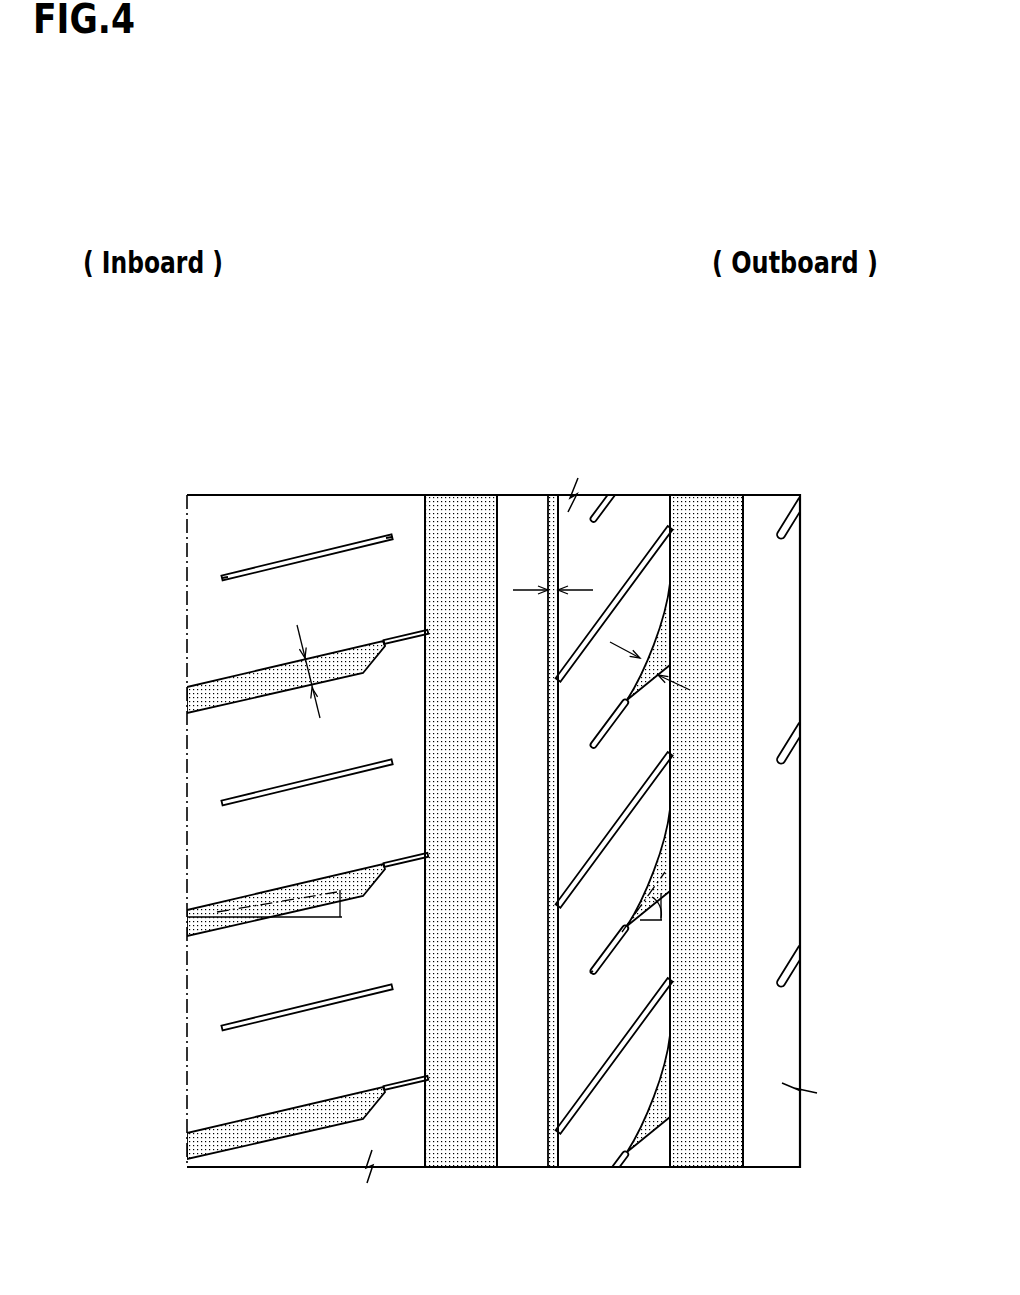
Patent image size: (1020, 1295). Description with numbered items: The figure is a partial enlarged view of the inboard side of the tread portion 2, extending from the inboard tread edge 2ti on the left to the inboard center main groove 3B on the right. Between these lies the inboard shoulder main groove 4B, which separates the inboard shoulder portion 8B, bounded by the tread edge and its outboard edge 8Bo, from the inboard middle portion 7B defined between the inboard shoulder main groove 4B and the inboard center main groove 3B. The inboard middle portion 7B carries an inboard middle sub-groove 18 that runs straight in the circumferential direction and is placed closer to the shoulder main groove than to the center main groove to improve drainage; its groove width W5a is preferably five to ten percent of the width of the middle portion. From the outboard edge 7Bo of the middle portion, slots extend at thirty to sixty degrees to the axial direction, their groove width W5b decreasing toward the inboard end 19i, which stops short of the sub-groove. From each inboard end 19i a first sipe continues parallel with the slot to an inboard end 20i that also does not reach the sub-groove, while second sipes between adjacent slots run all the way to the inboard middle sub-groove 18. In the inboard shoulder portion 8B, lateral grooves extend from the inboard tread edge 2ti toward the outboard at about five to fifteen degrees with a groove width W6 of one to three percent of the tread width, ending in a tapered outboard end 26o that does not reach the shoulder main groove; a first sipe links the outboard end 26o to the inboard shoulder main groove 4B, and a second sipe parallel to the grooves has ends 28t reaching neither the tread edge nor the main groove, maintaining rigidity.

The tread portion 2 is at (803, 473).
The inboard tread edge 2ti is at (186, 553).
The inboard center main groove 3B is at (705, 1118).
The inboard shoulder main groove 4B is at (465, 1118).
The inboard middle portion 7B is at (640, 542).
The outboard edge of the inboard middle portion 7Bo is at (670, 515).
The inboard shoulder portion 8B is at (307, 543).
The outboard edge of the inboard shoulder portion 8Bo is at (428, 530).
The inboard middle sub-groove 18 is at (560, 1047).
The inboard end of the inboard middle slot 19i is at (628, 702).
The inboard end of the first inboard middle sipe 20i is at (591, 975).
The outboard end of the inboard shoulder lateral groove 26o is at (385, 648).
The end of the second inboard shoulder sipe 28t is at (222, 579).
The groove width of the inboard middle sub-groove W5a is at (568, 576).
The groove width of the inboard middle slot W5b is at (670, 650).
The groove width of the inboard shoulder lateral groove W6 is at (322, 670).